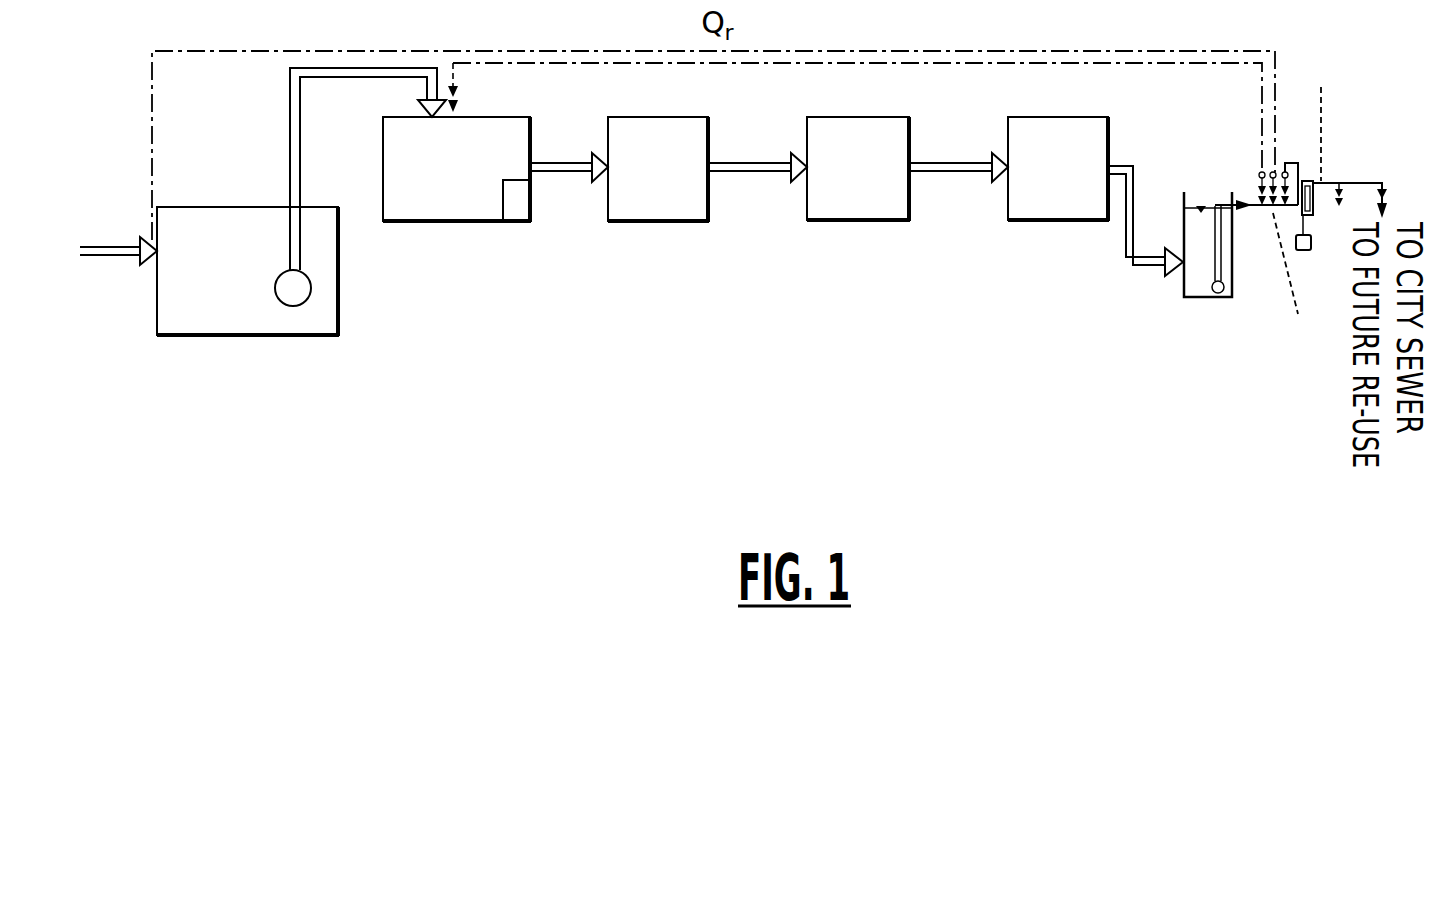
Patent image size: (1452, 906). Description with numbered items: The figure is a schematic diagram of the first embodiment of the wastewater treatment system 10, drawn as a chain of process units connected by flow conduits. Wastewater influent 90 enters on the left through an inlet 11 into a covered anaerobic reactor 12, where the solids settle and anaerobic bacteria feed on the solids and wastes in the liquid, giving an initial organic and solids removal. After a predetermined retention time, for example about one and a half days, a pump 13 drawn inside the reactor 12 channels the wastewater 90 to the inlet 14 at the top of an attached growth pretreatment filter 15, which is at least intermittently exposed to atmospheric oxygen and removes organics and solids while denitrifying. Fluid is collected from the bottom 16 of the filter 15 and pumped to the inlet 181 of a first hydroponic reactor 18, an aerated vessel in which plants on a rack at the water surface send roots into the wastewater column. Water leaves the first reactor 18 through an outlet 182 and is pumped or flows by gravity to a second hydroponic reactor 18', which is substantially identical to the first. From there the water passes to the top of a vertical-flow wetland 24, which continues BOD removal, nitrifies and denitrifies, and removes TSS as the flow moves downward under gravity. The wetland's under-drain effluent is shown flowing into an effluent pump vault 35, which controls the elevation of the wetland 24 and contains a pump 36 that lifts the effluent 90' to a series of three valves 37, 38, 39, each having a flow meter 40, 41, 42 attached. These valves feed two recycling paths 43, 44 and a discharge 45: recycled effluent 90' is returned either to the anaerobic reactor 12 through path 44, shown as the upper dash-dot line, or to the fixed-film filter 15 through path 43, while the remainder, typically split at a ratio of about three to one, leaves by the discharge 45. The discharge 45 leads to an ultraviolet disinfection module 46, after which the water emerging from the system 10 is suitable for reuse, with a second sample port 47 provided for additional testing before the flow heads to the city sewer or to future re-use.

The system 10 is at (667, 390).
The inlet 11 is at (155, 242).
The covered anaerobic reactor 12 is at (238, 222).
The pump 13 is at (306, 297).
The inlet 14 is at (457, 107).
The attached growth pretreatment filter 15 is at (443, 182).
The bottom of the filter 16 is at (447, 222).
The first hydroponic reactor 18 is at (658, 169).
The second hydroponic reactor 18' is at (858, 169).
The vertical-flow wetland 24 is at (1043, 184).
The effluent pump vault 35 is at (1213, 300).
The pump 36 is at (1224, 287).
The valve 37 is at (1260, 205).
The valve 38 is at (1265, 207).
The valve 39 is at (1287, 213).
The flow meter 40 is at (1262, 162).
The flow meter 41 is at (1277, 168).
The flow meter 42 is at (1298, 166).
The recycling path 43 is at (1035, 64).
The recycling path 44 is at (1077, 52).
The discharge 45 is at (1304, 178).
The ultraviolet disinfection module 46 is at (1309, 178).
The second sample port 47 is at (1313, 252).
The wastewater influent 90 is at (77, 202).
The effluent 90' is at (1197, 162).
The inlet 181 is at (607, 160).
The outlet 182 is at (710, 163).